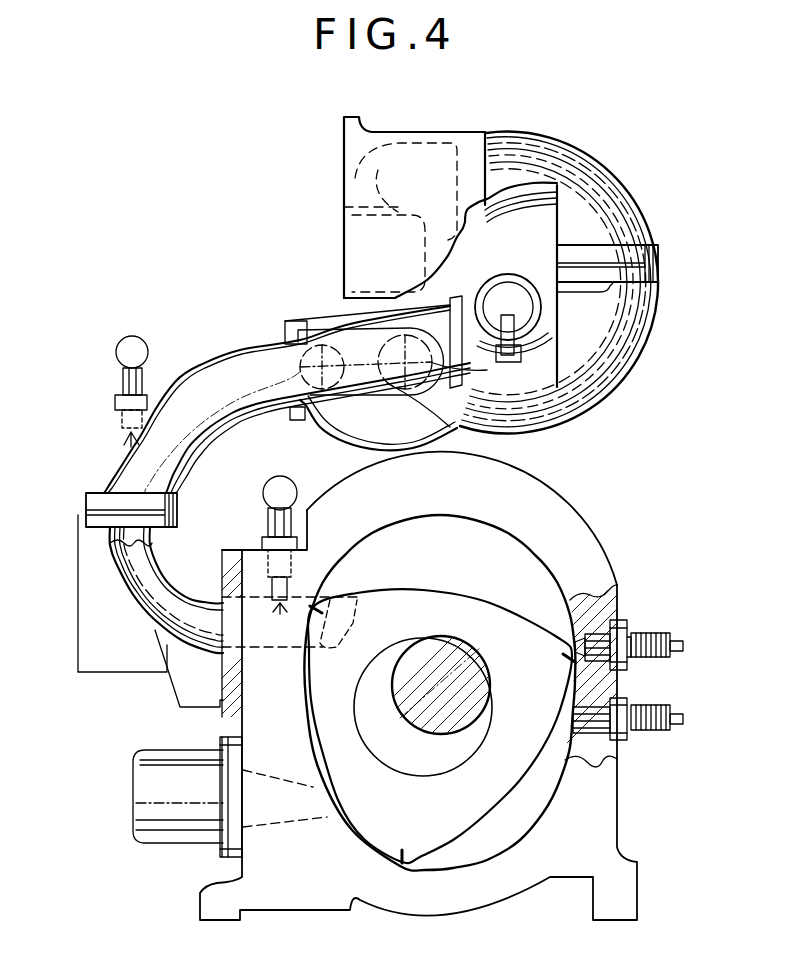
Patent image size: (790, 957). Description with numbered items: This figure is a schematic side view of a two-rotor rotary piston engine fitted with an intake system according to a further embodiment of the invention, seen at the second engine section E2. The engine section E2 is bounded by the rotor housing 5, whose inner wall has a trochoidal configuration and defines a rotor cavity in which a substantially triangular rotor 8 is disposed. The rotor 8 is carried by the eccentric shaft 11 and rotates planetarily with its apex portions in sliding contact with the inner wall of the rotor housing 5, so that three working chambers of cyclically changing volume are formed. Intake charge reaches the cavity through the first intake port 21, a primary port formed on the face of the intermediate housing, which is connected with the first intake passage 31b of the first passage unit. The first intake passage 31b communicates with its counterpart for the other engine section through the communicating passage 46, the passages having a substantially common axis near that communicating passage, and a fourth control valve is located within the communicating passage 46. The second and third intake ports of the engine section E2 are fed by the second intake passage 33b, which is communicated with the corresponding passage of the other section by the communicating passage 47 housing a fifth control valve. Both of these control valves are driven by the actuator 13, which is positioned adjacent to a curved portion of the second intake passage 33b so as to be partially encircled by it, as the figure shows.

The rotor housing 5 is at (607, 556).
The rotor 8 is at (493, 779).
The eccentric shaft 11 is at (397, 706).
The actuator 13 is at (507, 274).
The first intake port 21 is at (357, 600).
The first intake passage 31b is at (603, 388).
The second intake passage 33b is at (632, 332).
The communicating passage 46 is at (322, 360).
The communicating passage 47 is at (393, 355).
The engine section E2 is at (572, 503).